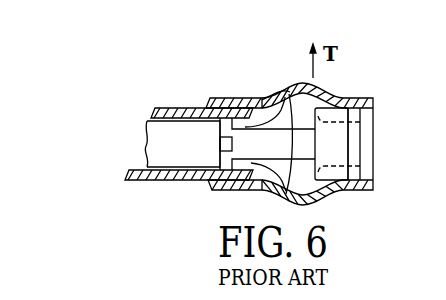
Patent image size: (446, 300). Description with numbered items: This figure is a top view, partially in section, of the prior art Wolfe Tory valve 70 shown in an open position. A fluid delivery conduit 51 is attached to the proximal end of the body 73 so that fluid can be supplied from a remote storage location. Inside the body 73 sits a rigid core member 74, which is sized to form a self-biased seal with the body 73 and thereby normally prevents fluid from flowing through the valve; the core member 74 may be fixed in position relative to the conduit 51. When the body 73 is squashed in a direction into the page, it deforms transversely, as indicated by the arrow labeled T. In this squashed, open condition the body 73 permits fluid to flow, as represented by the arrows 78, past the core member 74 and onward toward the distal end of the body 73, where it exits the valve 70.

The fluid delivery conduit 51 is at (153, 161).
The Wolfe Tory valve 70 is at (367, 85).
The body 73 is at (228, 101).
The rigid core member 74 is at (355, 141).
The fluid flow arrows 78 is at (288, 95).